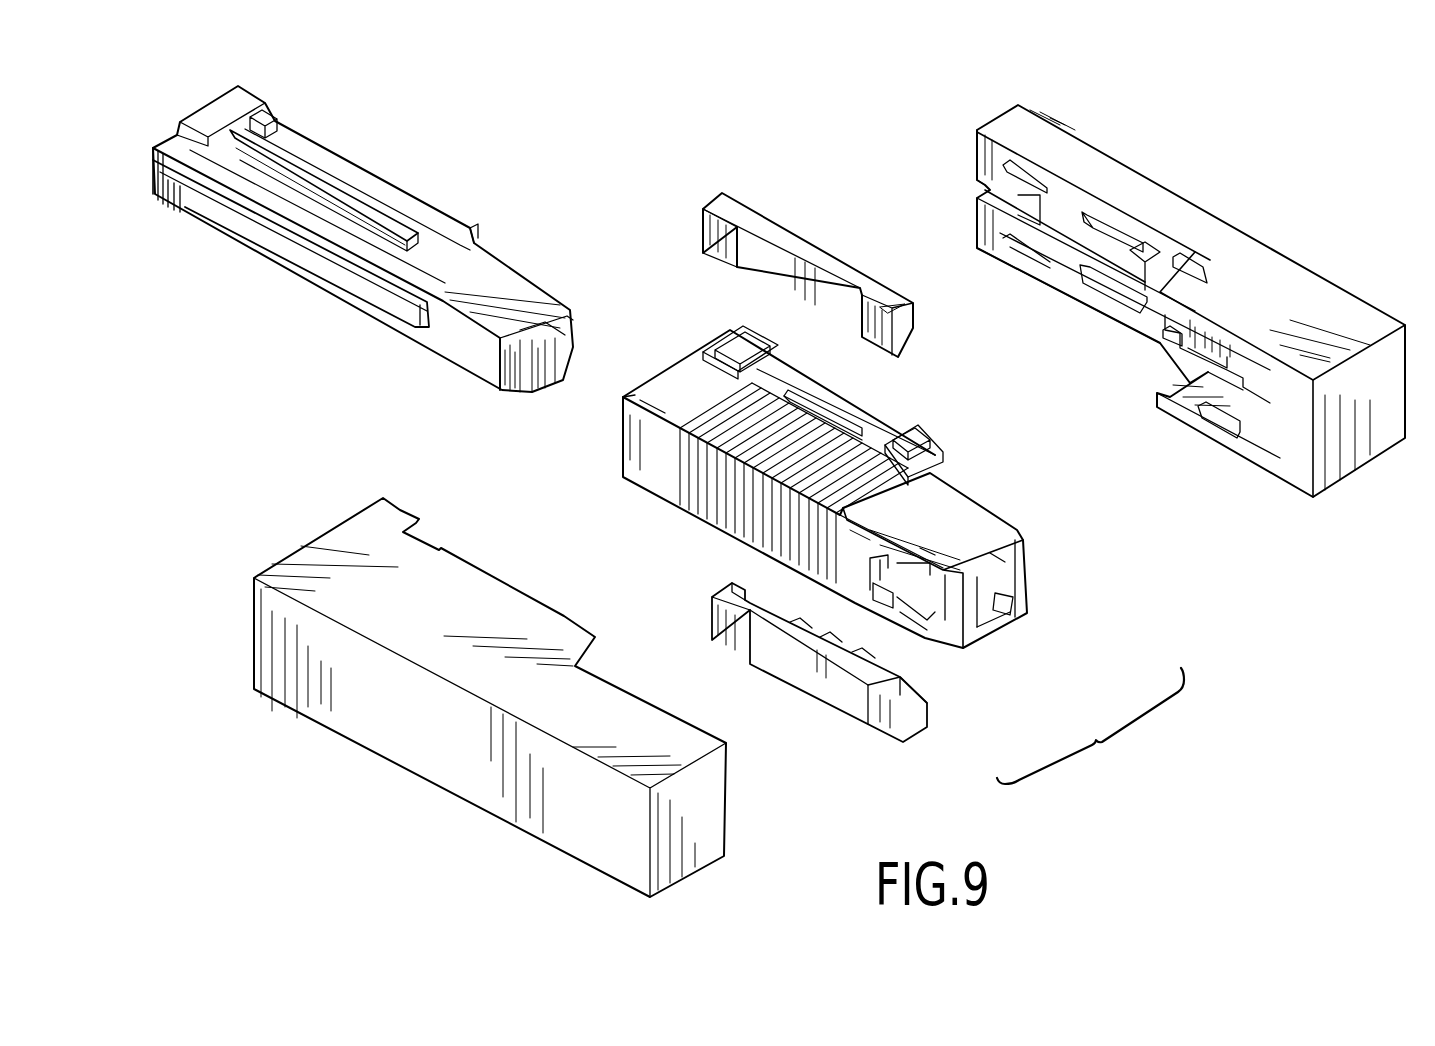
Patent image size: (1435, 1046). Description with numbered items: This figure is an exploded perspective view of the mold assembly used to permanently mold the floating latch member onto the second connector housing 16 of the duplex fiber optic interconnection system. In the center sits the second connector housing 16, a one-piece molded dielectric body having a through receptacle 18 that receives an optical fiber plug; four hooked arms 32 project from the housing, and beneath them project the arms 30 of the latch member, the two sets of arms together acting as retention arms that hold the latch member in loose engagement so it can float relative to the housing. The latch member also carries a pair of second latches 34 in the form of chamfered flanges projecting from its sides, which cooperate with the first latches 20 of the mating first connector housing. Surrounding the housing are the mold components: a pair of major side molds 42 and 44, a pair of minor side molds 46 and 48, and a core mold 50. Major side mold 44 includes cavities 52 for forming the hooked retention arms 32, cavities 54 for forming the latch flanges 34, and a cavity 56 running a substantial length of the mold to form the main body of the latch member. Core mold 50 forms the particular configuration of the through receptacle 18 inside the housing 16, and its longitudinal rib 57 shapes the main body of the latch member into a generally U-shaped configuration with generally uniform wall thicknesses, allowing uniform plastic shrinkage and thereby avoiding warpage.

The second connector housing 16 is at (648, 480).
The through receptacle 18 is at (1000, 616).
The first latch 20 is at (770, 383).
The arm 30 is at (728, 346).
The hooked arm 32 is at (747, 352).
The second latch 34 is at (866, 425).
The major side mold 42 is at (335, 548).
The major side mold 44 is at (1335, 312).
The minor side mold 46 is at (785, 238).
The minor side mold 48 is at (840, 688).
The core mold 50 is at (502, 293).
The cavity 52 is at (1030, 175).
The cavity 54 is at (1105, 220).
The cavity 56 is at (1142, 258).
The longitudinal rib 57 is at (362, 182).